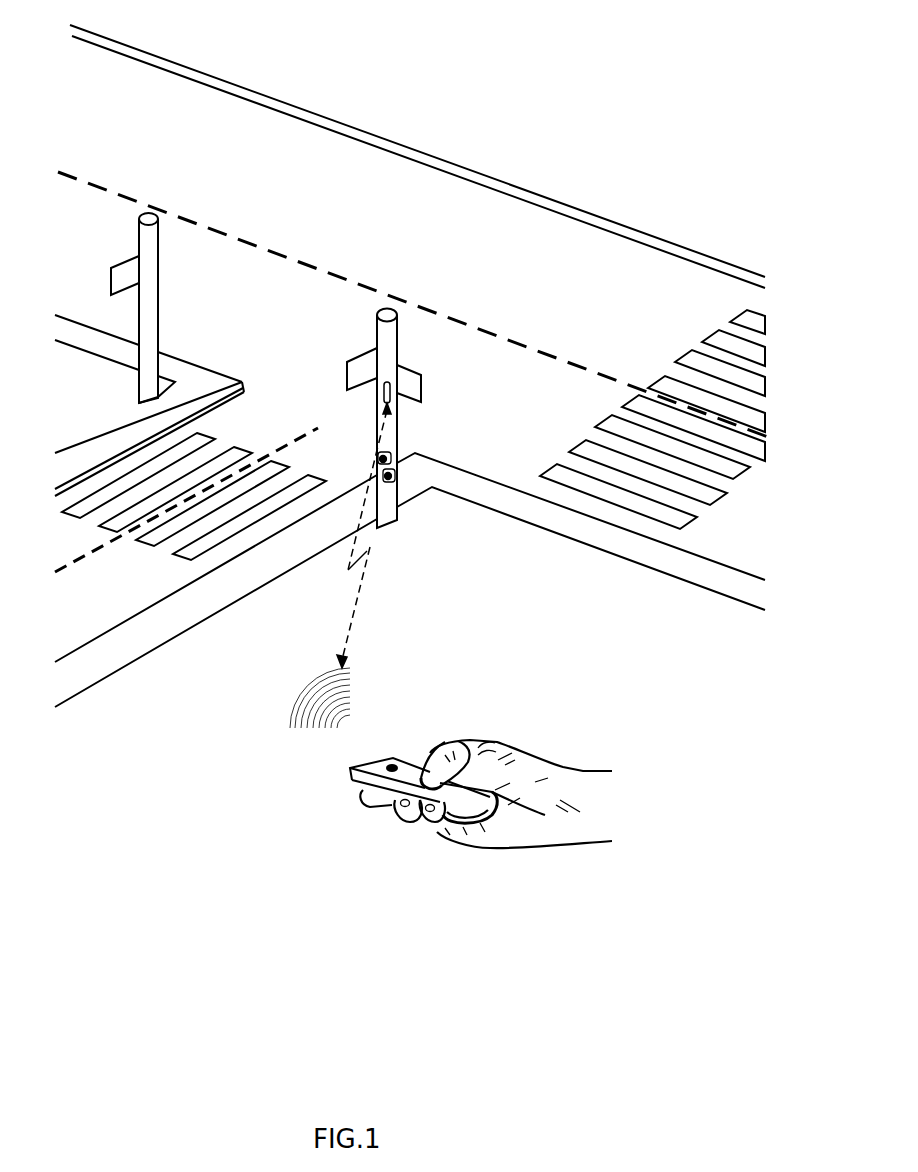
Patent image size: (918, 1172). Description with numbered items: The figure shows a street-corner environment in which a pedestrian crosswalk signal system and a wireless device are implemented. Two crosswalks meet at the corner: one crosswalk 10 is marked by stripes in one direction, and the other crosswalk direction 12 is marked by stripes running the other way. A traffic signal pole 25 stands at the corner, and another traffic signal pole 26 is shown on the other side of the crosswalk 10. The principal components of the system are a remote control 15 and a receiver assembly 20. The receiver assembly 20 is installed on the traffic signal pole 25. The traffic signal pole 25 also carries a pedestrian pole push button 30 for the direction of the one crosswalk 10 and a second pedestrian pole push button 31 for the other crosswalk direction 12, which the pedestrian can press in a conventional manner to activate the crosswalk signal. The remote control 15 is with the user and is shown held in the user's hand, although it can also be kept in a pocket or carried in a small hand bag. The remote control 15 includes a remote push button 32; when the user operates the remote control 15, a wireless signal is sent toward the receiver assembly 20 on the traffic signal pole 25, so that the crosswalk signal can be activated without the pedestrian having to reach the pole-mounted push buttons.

The crosswalk 10 is at (237, 443).
The other crosswalk direction 12 is at (680, 353).
The remote control 15 is at (403, 762).
The receiver assembly 20 is at (381, 398).
The traffic signal pole 25 is at (398, 330).
The traffic signal pole 26 is at (157, 230).
The pedestrian pole push button 30 is at (391, 457).
The second pedestrian pole push button 31 is at (395, 478).
The remote push button 32 is at (395, 785).